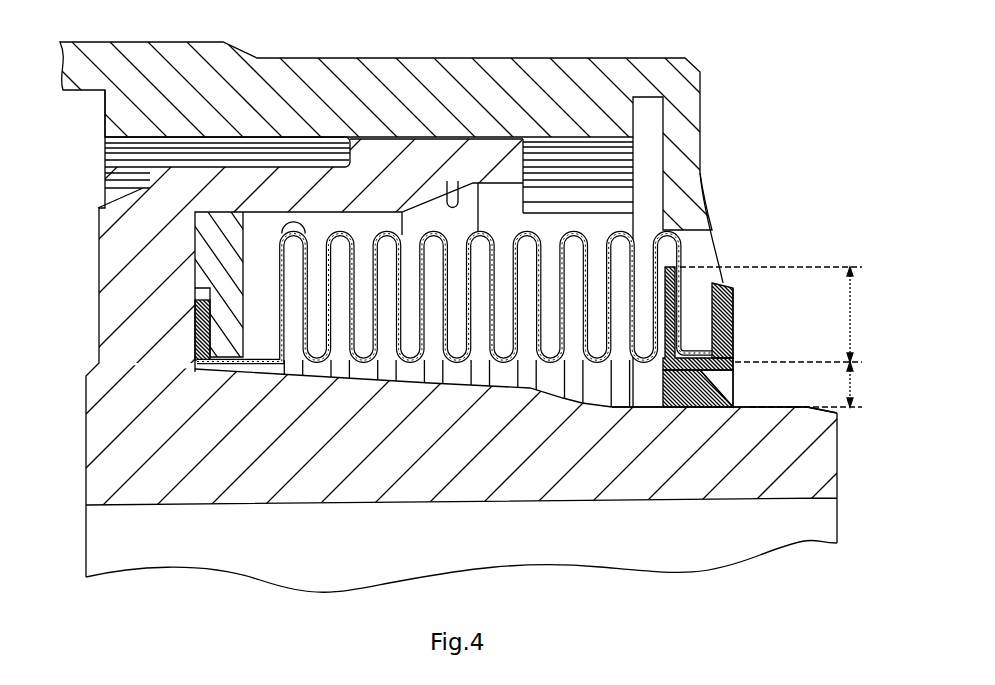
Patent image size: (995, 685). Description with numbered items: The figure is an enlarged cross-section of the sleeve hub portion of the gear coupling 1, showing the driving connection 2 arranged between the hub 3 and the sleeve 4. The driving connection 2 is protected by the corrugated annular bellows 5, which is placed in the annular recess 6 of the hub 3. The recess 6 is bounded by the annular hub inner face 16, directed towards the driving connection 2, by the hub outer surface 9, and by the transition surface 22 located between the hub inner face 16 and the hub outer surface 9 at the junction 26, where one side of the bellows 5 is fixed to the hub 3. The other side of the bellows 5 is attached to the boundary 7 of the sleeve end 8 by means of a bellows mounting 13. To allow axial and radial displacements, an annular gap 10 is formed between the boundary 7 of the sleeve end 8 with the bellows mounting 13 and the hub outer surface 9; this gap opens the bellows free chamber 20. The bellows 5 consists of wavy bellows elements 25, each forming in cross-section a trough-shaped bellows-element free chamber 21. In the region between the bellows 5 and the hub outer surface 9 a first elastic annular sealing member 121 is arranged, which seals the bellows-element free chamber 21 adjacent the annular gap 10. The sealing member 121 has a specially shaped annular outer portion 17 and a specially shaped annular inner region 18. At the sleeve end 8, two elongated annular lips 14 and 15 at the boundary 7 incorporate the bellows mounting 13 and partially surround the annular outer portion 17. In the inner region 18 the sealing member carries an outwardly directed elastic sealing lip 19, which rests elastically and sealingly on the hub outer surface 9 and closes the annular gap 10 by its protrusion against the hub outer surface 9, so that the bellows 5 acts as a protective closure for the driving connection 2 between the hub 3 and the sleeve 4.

The gear coupling 1 is at (792, 74).
The driving connection 2 is at (371, 156).
The hub 3 is at (133, 323).
The sleeve 4 is at (687, 57).
The bellows 5 is at (390, 221).
The recess 6 is at (423, 216).
The boundary 7 is at (665, 378).
The sleeve end 8 is at (706, 262).
The hub outer surface 9 is at (808, 408).
The annular gap 10 is at (728, 392).
The bellows mounting 13 is at (690, 349).
The annular lip 14 is at (668, 265).
The annular lip 15 is at (733, 304).
The hub inner face 16 is at (453, 197).
The annular outer portion 17 is at (852, 316).
The annular inner region 18 is at (852, 384).
The sealing lip 19 is at (710, 408).
The bellows free chamber 20 is at (500, 384).
The bellows-element free chamber 21 is at (290, 245).
The transition surface 22 is at (193, 278).
The bellows element 25 is at (317, 254).
The junction 26 is at (193, 320).
The first elastic annular sealing member 121 is at (742, 350).